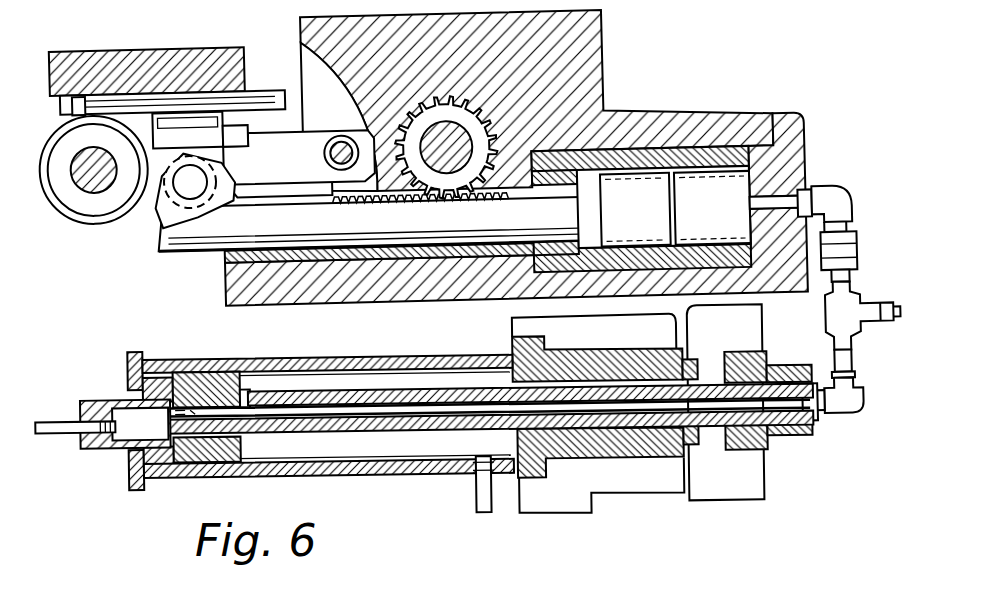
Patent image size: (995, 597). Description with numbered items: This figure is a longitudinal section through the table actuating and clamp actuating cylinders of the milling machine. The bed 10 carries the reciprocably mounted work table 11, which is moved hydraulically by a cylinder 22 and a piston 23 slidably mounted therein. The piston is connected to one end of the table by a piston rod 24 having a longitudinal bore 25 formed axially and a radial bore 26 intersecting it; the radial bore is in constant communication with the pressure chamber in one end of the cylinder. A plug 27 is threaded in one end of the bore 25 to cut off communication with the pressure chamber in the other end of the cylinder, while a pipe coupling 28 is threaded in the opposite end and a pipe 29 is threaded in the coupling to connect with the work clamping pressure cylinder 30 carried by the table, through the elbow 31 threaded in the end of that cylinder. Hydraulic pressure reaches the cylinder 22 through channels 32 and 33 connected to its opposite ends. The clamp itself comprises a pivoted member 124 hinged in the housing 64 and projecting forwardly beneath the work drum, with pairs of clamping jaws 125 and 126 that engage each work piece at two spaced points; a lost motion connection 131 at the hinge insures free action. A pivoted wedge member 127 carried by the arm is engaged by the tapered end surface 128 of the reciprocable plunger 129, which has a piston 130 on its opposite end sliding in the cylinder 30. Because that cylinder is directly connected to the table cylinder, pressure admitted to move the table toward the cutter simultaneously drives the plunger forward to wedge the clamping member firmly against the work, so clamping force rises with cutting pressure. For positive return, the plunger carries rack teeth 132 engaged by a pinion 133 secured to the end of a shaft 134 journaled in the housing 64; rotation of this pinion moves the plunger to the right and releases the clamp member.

The bed 10 is at (577, 506).
The work table 11 is at (743, 493).
The cylinder 22 is at (247, 474).
The piston 23 is at (245, 354).
The piston rod 24 is at (385, 389).
The longitudinal bore 25 is at (350, 391).
The radial bore 26 is at (255, 390).
The plug 27 is at (127, 447).
The pipe coupling 28 is at (842, 410).
The pipe 29 is at (833, 361).
The work clamping pressure cylinder 30 is at (745, 194).
The elbow 31 is at (830, 205).
The channel 32 is at (477, 499).
The channel 33 is at (72, 427).
The housing 64 is at (307, 50).
The pivoted member 124 is at (267, 127).
The clamping jaw 125 is at (148, 109).
The clamping jaw 126 is at (233, 116).
The pivoted wedge member 127 is at (163, 204).
The tapered end surface 128 is at (182, 209).
The reciprocable plunger 129 is at (173, 240).
The piston 130 is at (618, 195).
The lost motion connection 131 is at (344, 131).
The rack teeth 132 is at (478, 197).
The pinion 133 is at (425, 118).
The shaft 134 is at (432, 124).